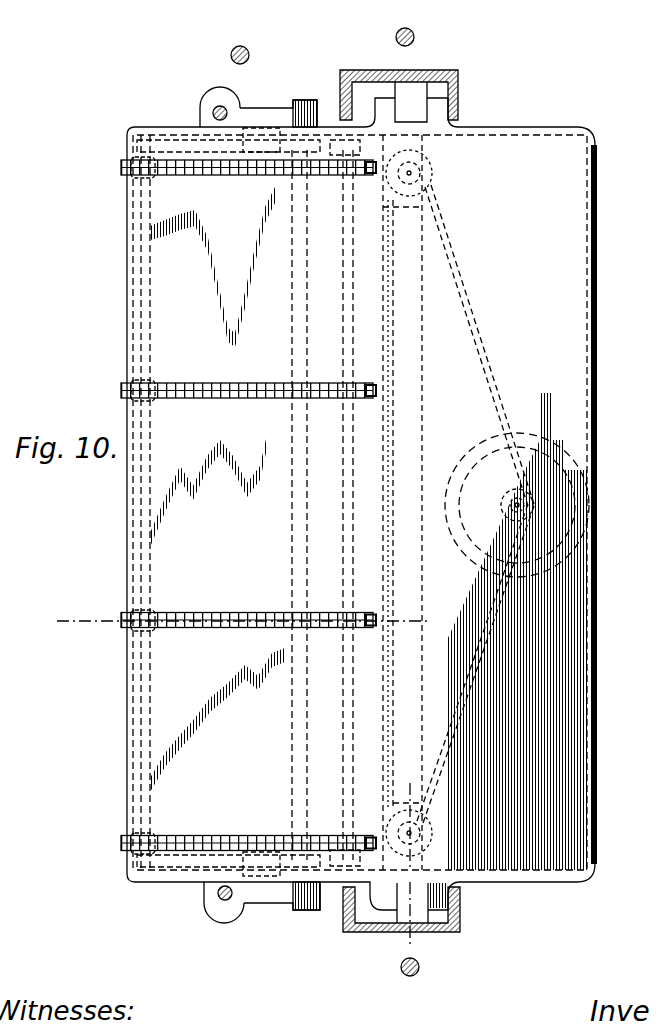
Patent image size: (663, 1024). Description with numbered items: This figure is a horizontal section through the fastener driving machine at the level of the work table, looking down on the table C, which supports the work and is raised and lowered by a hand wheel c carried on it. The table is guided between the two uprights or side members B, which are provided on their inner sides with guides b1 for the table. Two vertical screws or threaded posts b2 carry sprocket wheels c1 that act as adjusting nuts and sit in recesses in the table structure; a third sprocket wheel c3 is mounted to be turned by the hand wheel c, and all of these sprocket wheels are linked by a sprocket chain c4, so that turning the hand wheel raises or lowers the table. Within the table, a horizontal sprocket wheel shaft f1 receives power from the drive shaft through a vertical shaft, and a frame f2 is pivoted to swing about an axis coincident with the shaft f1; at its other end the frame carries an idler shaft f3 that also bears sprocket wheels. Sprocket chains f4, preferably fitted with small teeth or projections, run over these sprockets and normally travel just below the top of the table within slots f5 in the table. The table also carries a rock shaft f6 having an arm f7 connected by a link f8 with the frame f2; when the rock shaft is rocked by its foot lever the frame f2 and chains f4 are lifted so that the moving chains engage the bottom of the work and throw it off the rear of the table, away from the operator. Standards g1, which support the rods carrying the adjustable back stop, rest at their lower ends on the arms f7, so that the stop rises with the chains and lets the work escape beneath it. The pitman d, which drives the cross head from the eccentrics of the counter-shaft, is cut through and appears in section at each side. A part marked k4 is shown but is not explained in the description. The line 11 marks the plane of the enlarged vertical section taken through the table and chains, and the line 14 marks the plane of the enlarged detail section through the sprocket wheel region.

The table C is at (586, 402).
The uprights or side members B is at (440, 72).
The guides b1 is at (417, 97).
The vertical screws or threaded posts b2 is at (427, 163).
The sprocket wheels c1 is at (433, 187).
The sprocket chain c4 is at (500, 363).
The hand wheel c is at (553, 443).
The third sprocket wheel c3 is at (506, 495).
The horizontal sprocket wheel shaft f1 is at (147, 315).
The frame f2 is at (180, 147).
The shaft f3 is at (345, 315).
The sprocket chains f4 is at (202, 175).
The slots f5 is at (148, 180).
The rock shaft f6 is at (293, 257).
The arm f7 is at (257, 110).
The link f8 is at (250, 150).
The standards g1 is at (217, 112).
The pin k4 is at (245, 48).
The pitman d is at (413, 30).
The section line 11 is at (56, 620).
The section line 14 is at (432, 786).